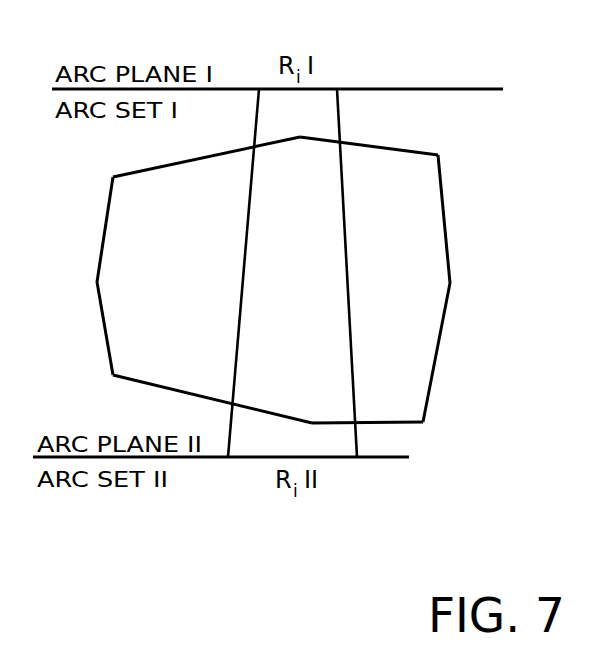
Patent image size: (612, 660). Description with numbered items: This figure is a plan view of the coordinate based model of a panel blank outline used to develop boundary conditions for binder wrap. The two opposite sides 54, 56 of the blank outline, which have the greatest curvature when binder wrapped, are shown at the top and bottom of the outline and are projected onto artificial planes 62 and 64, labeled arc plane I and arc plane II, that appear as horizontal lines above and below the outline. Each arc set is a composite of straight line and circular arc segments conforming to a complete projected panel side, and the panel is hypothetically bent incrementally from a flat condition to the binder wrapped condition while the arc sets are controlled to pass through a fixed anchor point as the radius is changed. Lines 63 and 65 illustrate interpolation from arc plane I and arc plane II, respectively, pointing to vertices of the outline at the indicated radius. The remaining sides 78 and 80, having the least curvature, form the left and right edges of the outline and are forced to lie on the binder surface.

The side 54 is at (178, 160).
The side 56 is at (170, 389).
The artificial plane 62 is at (407, 89).
The line 63 is at (306, 135).
The artificial plane 64 is at (385, 457).
The line 65 is at (318, 412).
The side 78 is at (441, 337).
The side 80 is at (100, 247).